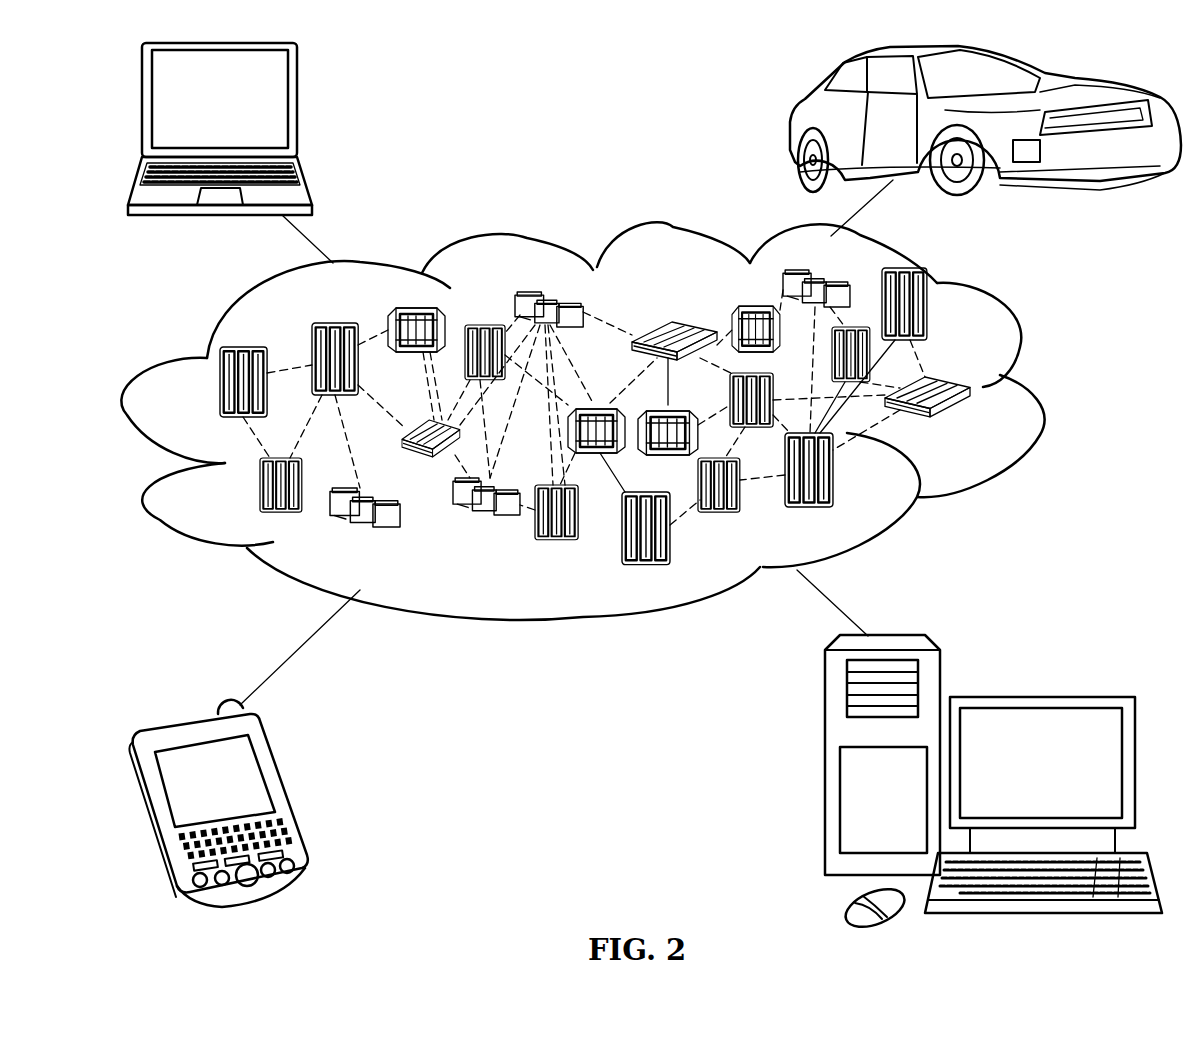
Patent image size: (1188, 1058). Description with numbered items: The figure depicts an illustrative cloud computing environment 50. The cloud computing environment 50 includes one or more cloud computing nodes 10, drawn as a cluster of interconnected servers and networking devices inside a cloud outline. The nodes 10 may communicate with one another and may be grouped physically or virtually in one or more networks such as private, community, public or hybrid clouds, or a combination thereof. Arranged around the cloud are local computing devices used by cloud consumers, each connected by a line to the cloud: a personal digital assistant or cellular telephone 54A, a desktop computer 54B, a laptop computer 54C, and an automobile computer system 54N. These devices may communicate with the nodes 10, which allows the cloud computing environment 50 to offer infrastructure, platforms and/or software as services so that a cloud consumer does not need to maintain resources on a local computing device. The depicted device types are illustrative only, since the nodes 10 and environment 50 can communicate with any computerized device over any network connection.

The cloud computing nodes 10 is at (985, 430).
The cloud computing environment 50 is at (1034, 397).
The personal digital assistant (PDA) or cellular telephone 54A is at (287, 792).
The desktop computer 54B is at (1041, 697).
The laptop computer 54C is at (298, 110).
The automobile computer system 54N is at (790, 122).